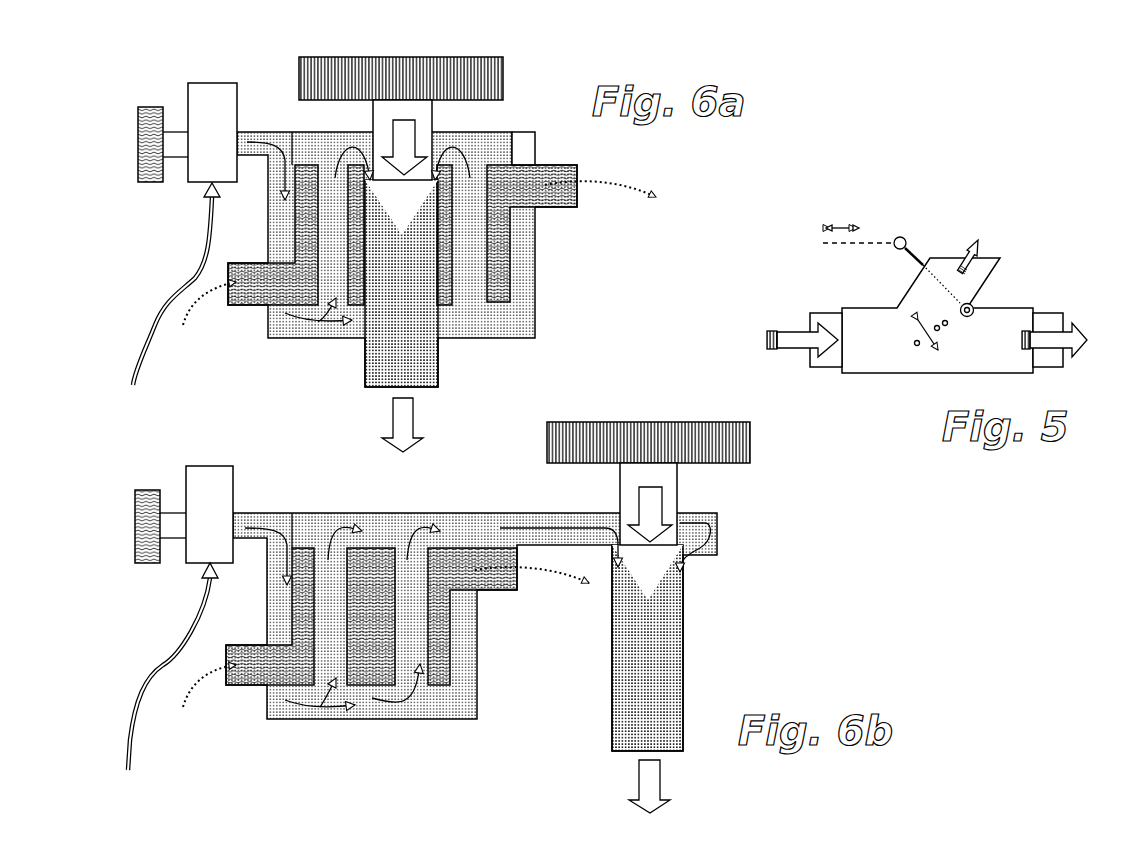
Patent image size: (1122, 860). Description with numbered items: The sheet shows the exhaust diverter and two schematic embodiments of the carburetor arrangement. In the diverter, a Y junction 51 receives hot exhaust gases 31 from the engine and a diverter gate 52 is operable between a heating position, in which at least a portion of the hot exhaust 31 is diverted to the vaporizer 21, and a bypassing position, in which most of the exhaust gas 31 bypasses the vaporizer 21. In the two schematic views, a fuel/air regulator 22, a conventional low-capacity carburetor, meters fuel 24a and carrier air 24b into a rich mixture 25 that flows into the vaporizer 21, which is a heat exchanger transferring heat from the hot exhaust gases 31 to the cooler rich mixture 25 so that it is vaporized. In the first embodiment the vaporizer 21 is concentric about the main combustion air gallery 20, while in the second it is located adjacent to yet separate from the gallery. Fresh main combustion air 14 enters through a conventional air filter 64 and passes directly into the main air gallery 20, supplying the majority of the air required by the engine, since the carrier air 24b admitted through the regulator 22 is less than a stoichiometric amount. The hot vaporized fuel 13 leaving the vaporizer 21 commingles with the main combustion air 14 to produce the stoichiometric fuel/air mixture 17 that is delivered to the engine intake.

In FIG. 6B, the hot vaporized fuel 13 is at (680, 560).
In FIG. 6A, the main combustion air 14 is at (402, 143).
In FIG. 6B, the main combustion air 14 is at (657, 512).
In FIG. 6A, the stoichiometric fuel/air mixture 17 is at (405, 418).
In FIG. 6B, the stoichiometric fuel/air mixture 17 is at (655, 783).
In FIG. 6A, the main combustion air gallery 20 is at (440, 378).
In FIG. 6A, the vaporizer 21 is at (535, 322).
In FIG. 6B, the vaporizer 21 is at (477, 700).
In FIG. 6A, the fuel/air regulator 22 is at (228, 83).
In FIG. 6A, the fuel 24a is at (140, 325).
In FIG. 6B, the fuel 24a is at (160, 666).
In FIG. 6A, the carrier air 24b is at (138, 143).
In FIG. 6A, the rich mixture 25 is at (256, 160).
In FIG. 6B, the rich mixture 25 is at (582, 527).
In FIG. 6A, the hot exhaust gases 31 is at (196, 300).
In FIG. 6B, the hot exhaust gases 31 is at (196, 690).
In FIG. 5, the hot exhaust gases 31 is at (963, 250).
In FIG. 5, the Y junction 51 is at (875, 352).
In FIG. 5, the diverter gate 52 is at (955, 328).
In FIG. 6A, the air filter 64 is at (478, 57).
In FIG. 6B, the air filter 64 is at (717, 422).